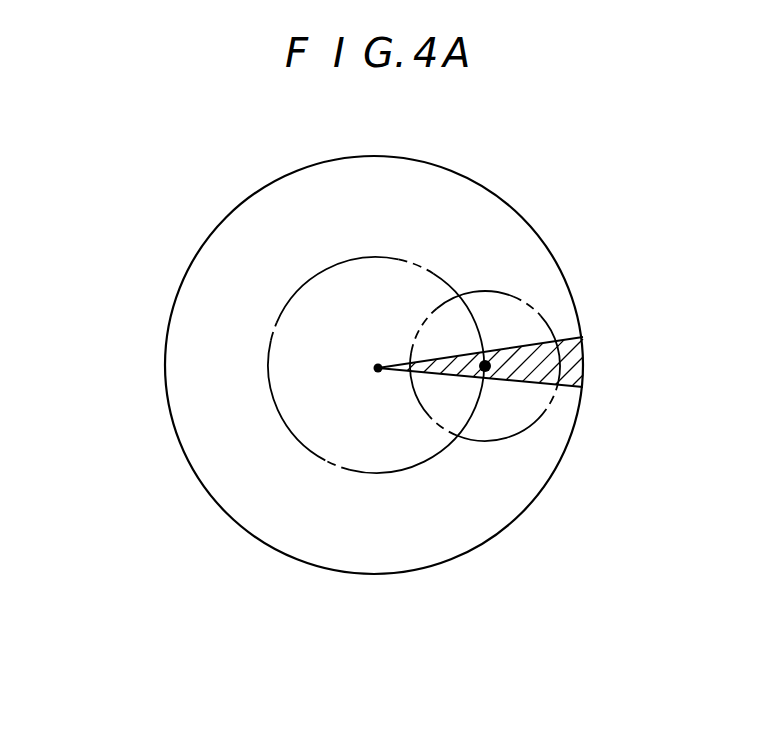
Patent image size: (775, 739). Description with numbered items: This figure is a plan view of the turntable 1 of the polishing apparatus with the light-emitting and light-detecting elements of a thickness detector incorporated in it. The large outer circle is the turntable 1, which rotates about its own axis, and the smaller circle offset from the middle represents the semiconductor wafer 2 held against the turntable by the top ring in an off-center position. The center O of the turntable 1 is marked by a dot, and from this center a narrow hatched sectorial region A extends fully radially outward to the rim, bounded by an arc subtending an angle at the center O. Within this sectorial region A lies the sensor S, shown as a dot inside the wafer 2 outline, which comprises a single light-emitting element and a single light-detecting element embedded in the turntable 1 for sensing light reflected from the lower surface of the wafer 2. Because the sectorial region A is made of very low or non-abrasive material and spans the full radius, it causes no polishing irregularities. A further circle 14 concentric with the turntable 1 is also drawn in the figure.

The turntable 1 is at (528, 217).
The semiconductor wafer 2 is at (538, 313).
The inner circle (track boundary) 14 is at (440, 453).
The center of the turntable O is at (378, 352).
The sectorial region A is at (575, 353).
The sensor S is at (540, 417).